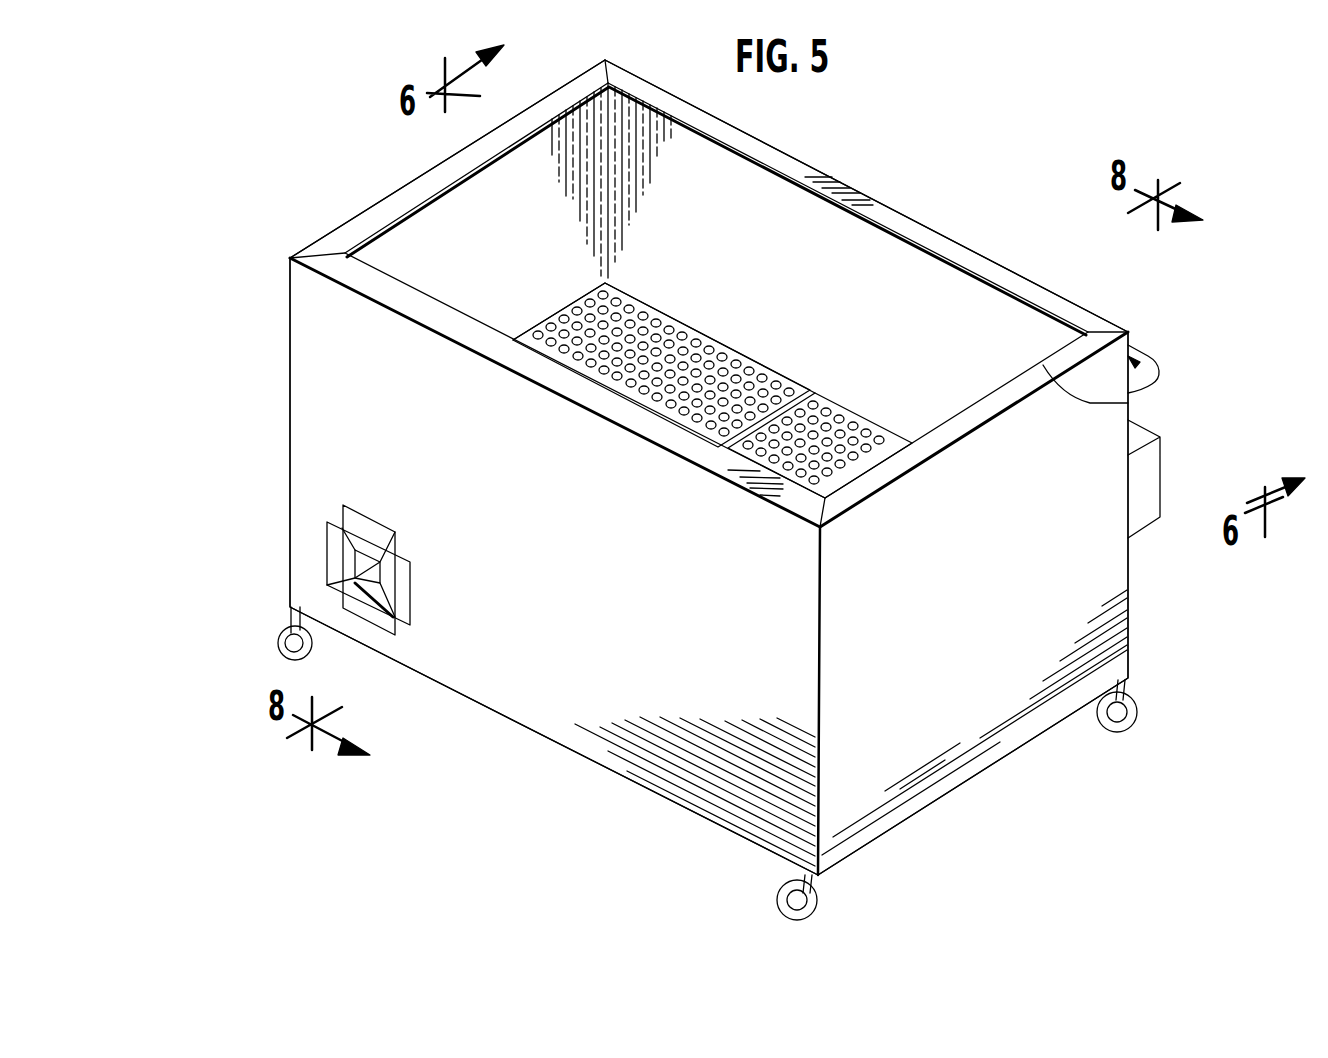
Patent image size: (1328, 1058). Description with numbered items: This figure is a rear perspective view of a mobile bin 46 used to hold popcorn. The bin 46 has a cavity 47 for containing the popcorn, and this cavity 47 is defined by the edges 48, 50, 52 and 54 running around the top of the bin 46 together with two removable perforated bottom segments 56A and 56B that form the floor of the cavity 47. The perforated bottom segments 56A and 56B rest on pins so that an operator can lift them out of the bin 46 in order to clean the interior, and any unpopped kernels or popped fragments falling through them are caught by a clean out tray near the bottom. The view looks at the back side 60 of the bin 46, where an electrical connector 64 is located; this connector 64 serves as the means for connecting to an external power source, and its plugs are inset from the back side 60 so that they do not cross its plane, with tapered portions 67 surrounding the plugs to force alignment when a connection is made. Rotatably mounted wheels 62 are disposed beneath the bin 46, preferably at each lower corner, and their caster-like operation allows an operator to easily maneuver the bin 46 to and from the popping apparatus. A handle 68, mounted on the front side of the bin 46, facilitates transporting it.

The bin 46 is at (917, 170).
The cavity 47 is at (960, 333).
The edge 48 is at (445, 308).
The edge 50 is at (418, 205).
The edge 52 is at (785, 175).
The edge 54 is at (1128, 403).
The removable perforated bottom segment 56A is at (871, 384).
The removable perforated bottom segment 56B is at (718, 288).
The back side 60 is at (614, 579).
The wheels 62 is at (278, 643).
The electrical connector 64 is at (387, 482).
The tapered portions 67 is at (364, 540).
The handle 68 is at (1143, 350).